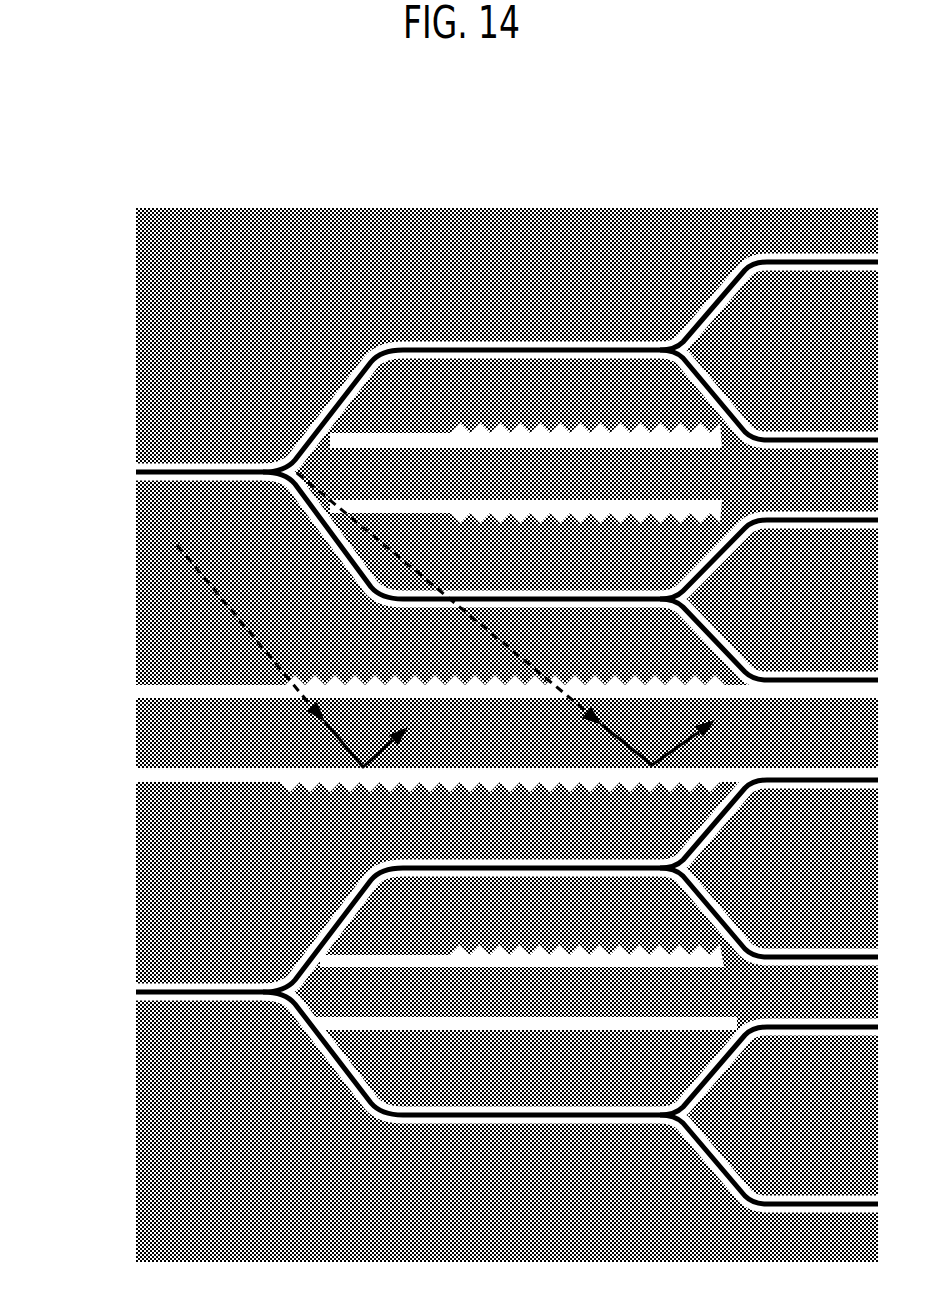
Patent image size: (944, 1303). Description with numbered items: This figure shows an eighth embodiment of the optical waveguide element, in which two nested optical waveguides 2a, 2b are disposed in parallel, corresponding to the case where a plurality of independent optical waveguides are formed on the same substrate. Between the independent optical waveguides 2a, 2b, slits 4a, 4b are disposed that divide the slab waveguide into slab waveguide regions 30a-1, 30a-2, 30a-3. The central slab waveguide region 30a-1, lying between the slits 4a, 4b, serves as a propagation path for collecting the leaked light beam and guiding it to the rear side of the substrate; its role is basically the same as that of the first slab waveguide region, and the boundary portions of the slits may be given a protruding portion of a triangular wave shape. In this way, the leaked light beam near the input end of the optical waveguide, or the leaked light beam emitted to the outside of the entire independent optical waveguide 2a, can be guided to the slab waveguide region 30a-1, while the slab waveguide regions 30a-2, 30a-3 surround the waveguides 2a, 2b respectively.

The independent optical waveguide 2a is at (314, 398).
The independent optical waveguide 2b is at (297, 1033).
The slit 4a is at (220, 686).
The slit 4b is at (222, 778).
The slab waveguide region 30a-1 is at (507, 733).
The slab waveguide region 30a-2 is at (442, 479).
The slab waveguide region 30a-3 is at (467, 952).